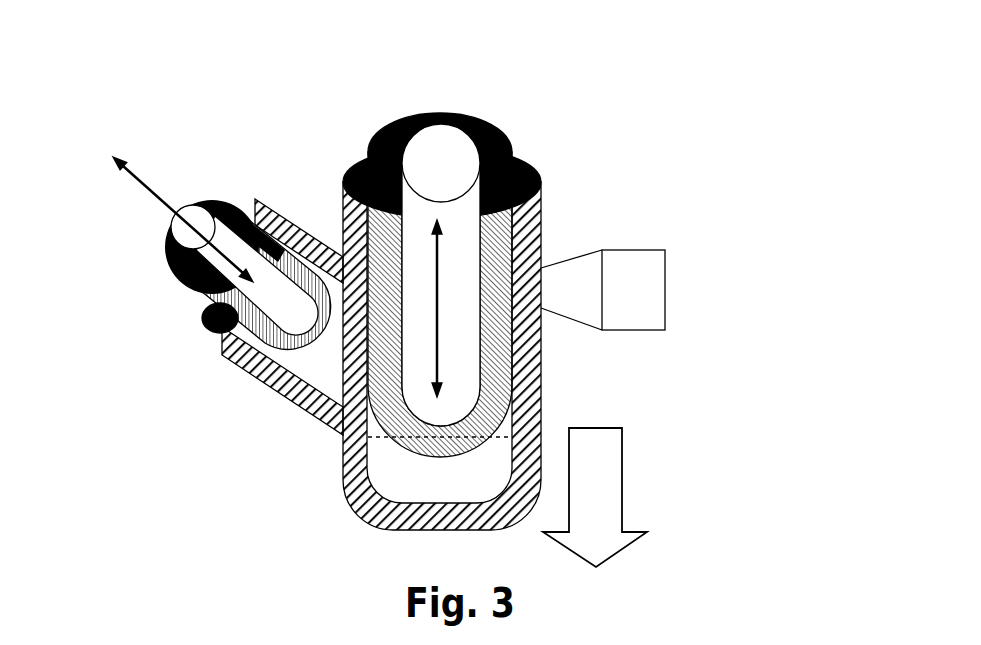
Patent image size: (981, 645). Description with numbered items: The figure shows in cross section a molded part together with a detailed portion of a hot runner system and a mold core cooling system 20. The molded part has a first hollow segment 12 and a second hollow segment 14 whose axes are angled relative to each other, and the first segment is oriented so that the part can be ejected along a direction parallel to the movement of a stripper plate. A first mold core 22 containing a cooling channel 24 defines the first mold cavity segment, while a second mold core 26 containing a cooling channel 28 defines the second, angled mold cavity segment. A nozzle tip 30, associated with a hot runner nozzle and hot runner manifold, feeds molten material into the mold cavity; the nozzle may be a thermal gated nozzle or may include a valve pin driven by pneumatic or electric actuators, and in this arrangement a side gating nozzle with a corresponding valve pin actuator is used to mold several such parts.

The first hollow segment 12 is at (541, 405).
The second hollow segment 14 is at (290, 378).
The mold core cooling system 20 is at (682, 132).
The first mold core 22 is at (377, 133).
The cooling channel 24 is at (445, 198).
The second mold core 26 is at (172, 273).
The cooling channel 28 is at (253, 292).
The nozzle tip 30 is at (667, 273).